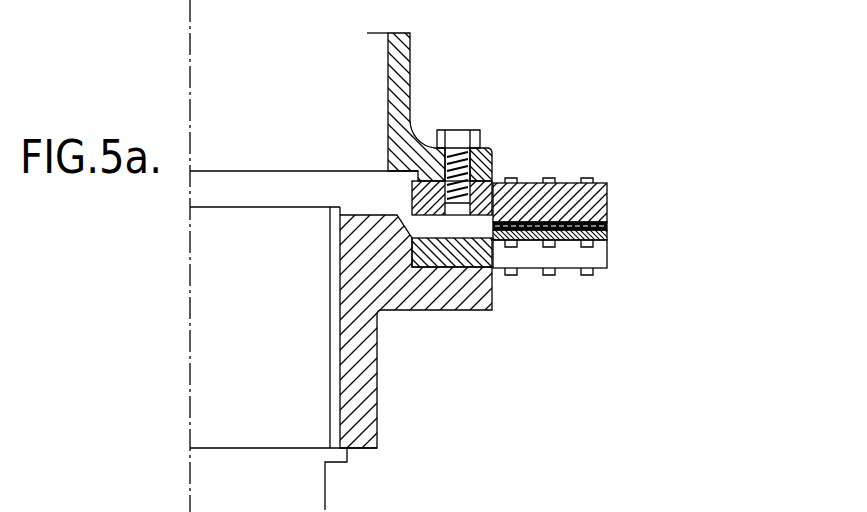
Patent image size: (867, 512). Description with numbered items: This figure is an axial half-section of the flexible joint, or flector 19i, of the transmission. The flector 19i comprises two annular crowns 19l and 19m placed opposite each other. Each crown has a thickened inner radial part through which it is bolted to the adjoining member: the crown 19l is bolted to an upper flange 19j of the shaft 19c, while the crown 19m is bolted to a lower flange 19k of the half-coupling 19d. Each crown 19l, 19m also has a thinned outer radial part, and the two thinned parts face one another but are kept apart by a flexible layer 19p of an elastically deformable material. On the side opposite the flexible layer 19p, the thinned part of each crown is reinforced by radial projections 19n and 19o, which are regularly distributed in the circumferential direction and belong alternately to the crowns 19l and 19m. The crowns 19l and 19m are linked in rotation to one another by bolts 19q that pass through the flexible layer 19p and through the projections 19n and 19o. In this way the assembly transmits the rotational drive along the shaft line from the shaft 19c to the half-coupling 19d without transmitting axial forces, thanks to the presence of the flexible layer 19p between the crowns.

The shaft 19c is at (358, 370).
The half-coupling 19d is at (402, 52).
The flector 19i is at (645, 132).
The upper flange 19j is at (437, 288).
The lower flange 19k is at (480, 158).
The annular crown 19l is at (492, 273).
The annular crown 19m is at (495, 180).
The radial projection 19n is at (588, 256).
The radial projection 19o is at (587, 203).
The flexible layer 19p is at (607, 224).
The bolts 19q is at (587, 178).